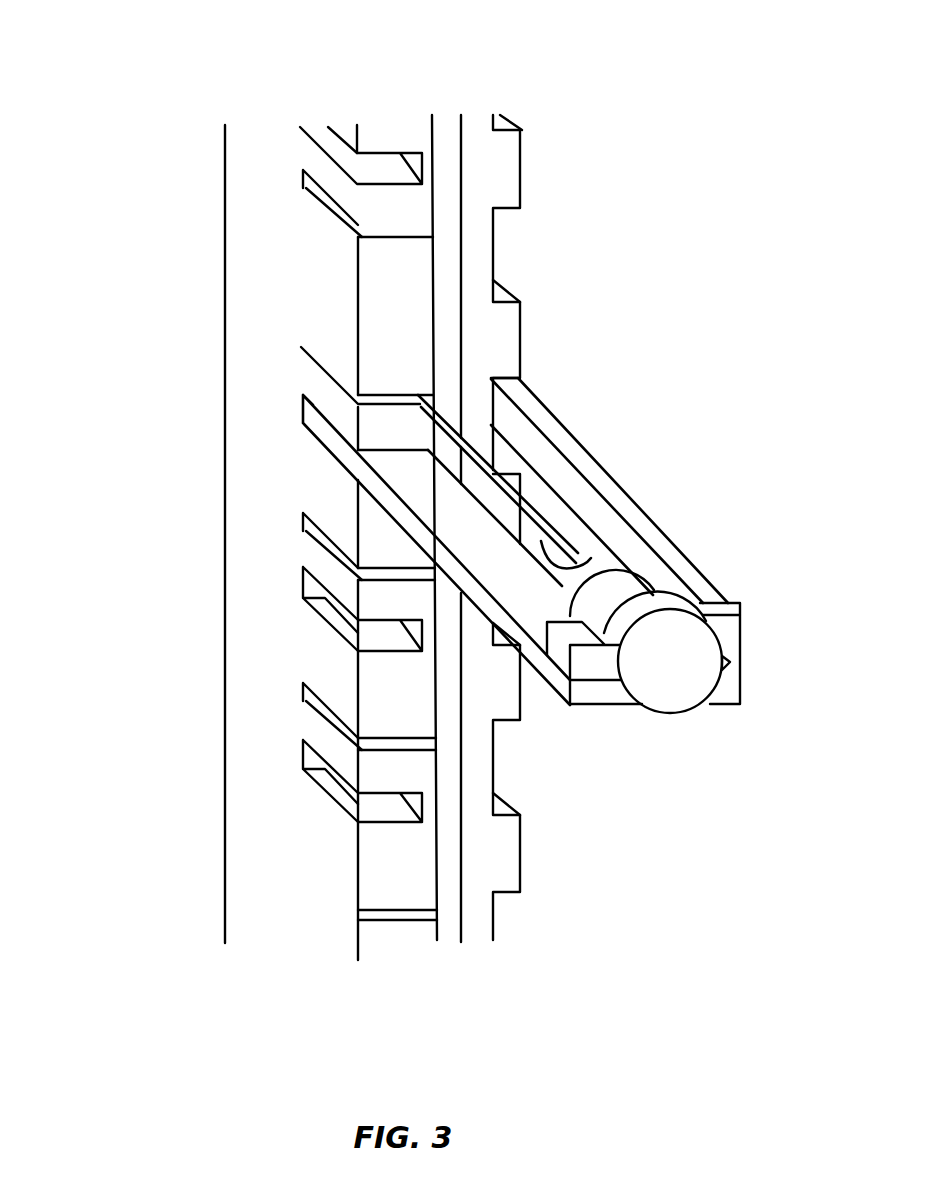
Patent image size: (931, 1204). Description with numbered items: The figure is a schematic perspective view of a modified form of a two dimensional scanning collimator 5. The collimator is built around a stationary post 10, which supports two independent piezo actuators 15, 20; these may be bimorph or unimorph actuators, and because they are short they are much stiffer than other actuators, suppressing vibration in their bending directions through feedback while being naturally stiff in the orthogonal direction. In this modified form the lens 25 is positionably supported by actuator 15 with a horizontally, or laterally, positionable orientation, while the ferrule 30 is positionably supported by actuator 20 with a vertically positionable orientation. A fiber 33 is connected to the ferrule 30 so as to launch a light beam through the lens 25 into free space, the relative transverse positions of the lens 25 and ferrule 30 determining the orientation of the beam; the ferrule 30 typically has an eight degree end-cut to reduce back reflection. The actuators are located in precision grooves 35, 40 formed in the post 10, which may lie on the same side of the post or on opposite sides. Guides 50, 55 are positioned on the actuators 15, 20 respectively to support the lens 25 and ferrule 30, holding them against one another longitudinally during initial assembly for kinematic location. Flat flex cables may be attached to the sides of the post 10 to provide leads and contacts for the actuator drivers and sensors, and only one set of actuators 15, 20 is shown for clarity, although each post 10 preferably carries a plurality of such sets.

The two dimensional scanning collimator 5 is at (133, 65).
The stationary post 10 is at (222, 360).
The piezo actuator 15 is at (537, 447).
The piezo actuator 20 is at (628, 712).
The lens 25 is at (683, 709).
The ferrule 30 is at (563, 620).
The fiber 33 is at (538, 537).
The precision groove 35 is at (328, 612).
The precision groove 40 is at (521, 249).
The guide 50 is at (728, 631).
The guide 55 is at (592, 663).